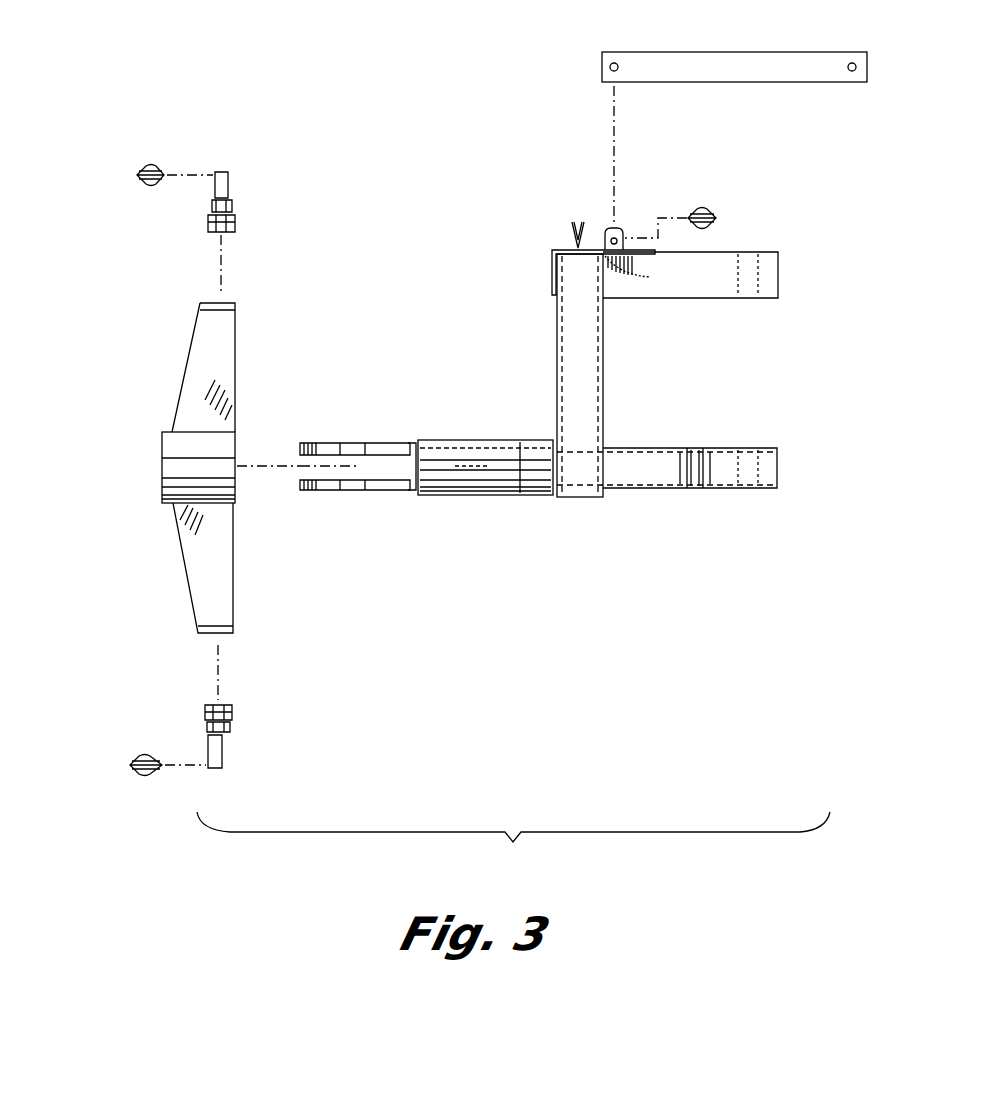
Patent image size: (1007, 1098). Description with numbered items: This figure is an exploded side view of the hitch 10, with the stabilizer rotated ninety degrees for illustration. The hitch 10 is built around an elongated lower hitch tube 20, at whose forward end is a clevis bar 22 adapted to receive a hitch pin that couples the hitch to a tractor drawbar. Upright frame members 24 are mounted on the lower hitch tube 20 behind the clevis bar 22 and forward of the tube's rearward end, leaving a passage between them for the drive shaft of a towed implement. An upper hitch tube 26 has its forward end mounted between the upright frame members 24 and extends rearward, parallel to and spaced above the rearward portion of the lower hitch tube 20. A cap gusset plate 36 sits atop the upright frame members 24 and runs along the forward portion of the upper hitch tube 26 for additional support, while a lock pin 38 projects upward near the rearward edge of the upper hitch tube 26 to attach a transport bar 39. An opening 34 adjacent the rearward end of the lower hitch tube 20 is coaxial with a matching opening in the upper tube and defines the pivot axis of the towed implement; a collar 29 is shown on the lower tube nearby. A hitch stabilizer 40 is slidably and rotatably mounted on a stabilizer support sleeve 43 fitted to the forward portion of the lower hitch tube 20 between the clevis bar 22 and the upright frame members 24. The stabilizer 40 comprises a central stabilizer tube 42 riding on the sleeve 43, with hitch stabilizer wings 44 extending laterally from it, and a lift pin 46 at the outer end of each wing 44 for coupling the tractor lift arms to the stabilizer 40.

The hitch 10 is at (513, 842).
The lower hitch tube 20 is at (650, 490).
The clevis bar 22 is at (298, 488).
The upright frame members 24 is at (555, 390).
The upper hitch tube 26 is at (655, 299).
The ring 29 is at (690, 452).
The coaxial opening 34 is at (762, 450).
The cap gusset plate 36 is at (550, 276).
The lock pin 38 is at (605, 236).
The transport bar 39 is at (746, 52).
The hitch stabilizer 40 is at (129, 571).
The central stabilizer tube 42 is at (163, 432).
The stabilizer support sleeve 43 is at (500, 496).
The hitch stabilizer wings 44 is at (236, 360).
The lift pin 46 is at (229, 183).